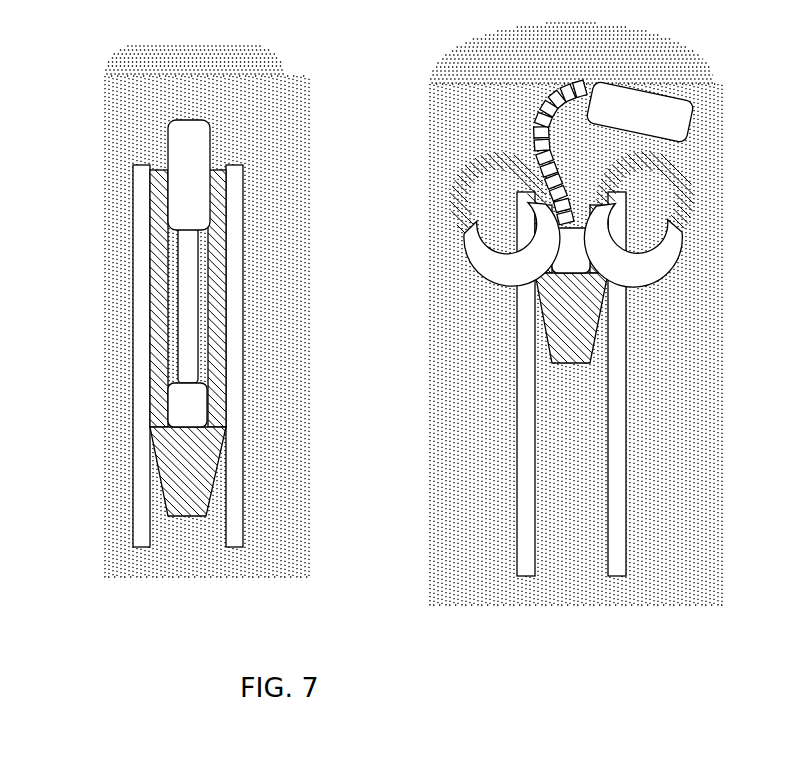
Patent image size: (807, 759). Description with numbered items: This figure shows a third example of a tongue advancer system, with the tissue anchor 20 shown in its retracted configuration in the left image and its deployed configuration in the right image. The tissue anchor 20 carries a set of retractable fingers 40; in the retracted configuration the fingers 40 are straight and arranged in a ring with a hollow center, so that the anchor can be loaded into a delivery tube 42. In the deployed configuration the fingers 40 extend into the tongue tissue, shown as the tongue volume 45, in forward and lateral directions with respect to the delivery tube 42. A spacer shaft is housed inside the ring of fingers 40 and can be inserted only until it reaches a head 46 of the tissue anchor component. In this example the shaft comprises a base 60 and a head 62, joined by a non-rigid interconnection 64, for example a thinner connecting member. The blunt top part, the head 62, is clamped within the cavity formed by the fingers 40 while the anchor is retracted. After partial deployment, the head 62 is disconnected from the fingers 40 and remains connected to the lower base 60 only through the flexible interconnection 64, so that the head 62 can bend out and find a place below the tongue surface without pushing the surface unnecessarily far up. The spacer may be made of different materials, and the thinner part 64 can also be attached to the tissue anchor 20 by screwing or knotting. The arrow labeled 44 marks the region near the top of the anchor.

The tissue anchor 20 is at (176, 527).
The retractable fingers 40 is at (160, 250).
The delivery tube 42 is at (623, 487).
The cavity 44 is at (220, 146).
The tongue volume 45 is at (145, 120).
The head of the tissue anchor component 46 is at (182, 453).
The base 60 is at (168, 412).
The head 62 is at (170, 151).
The non-rigid interconnection 64 is at (178, 292).